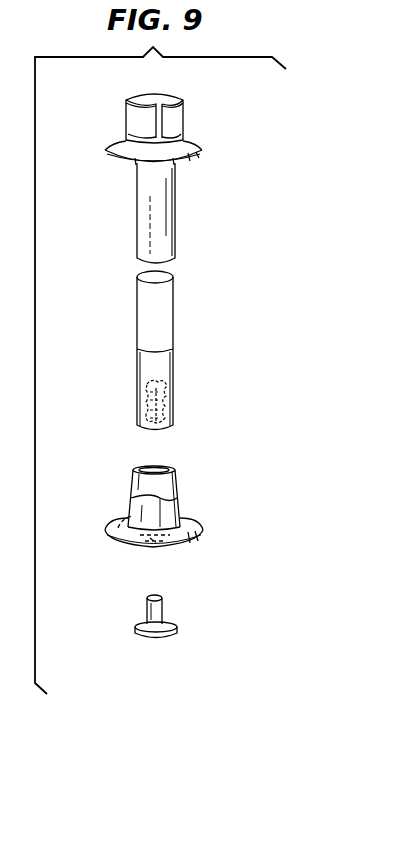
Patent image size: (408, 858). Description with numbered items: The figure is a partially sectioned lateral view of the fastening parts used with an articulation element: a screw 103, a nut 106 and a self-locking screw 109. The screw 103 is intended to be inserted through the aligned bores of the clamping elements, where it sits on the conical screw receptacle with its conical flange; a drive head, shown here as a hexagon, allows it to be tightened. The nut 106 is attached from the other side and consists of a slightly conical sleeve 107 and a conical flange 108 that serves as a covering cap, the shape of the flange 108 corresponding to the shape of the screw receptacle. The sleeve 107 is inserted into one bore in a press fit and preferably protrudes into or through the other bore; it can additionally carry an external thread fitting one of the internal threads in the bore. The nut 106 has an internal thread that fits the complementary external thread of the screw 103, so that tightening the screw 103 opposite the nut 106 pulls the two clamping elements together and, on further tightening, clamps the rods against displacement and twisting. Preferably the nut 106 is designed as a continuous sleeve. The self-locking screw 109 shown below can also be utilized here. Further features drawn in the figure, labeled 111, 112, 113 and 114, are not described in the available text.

The screw 103 is at (175, 212).
The nut 106 is at (220, 471).
The sleeve 107 is at (130, 515).
The conical flange 108 is at (200, 531).
The self-locking screw 109 is at (170, 640).
The bore 111 is at (148, 463).
The hidden opening 112 is at (148, 552).
The hidden recess 113 is at (118, 528).
The threaded portion 114 is at (172, 401).